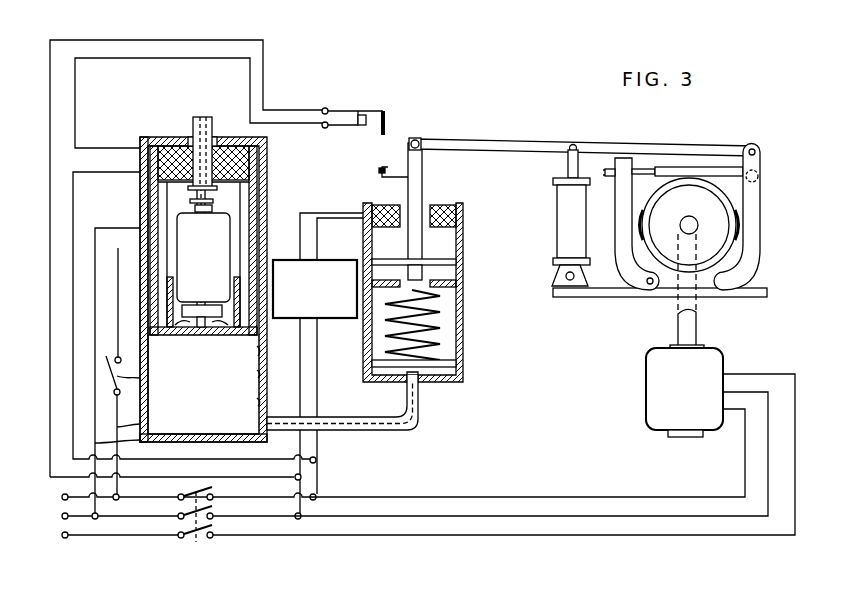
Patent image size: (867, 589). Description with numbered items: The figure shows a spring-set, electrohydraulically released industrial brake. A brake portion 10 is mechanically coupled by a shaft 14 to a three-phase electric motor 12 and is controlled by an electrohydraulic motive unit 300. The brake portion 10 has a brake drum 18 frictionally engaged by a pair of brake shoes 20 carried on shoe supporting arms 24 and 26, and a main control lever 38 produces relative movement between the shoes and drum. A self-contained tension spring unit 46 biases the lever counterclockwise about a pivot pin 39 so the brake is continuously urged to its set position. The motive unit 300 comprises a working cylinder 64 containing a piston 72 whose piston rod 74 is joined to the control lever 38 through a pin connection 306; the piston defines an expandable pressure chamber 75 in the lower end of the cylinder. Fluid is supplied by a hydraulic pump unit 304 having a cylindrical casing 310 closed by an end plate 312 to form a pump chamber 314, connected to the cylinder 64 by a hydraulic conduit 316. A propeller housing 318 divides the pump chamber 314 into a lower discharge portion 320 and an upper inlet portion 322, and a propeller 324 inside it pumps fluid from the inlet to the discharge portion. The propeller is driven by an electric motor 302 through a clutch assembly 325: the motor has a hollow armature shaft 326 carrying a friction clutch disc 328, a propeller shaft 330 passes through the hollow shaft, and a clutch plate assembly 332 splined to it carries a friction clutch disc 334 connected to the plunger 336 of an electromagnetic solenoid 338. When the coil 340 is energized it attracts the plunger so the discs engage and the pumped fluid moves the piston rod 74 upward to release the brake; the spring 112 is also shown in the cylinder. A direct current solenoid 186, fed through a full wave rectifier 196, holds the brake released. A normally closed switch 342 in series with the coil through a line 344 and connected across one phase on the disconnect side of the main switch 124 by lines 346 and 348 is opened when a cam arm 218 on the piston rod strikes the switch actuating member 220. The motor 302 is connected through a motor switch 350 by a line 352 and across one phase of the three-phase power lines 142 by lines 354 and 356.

The brake portion 10 is at (592, 340).
The three-phase electric motor 12 is at (718, 365).
The shaft 14 is at (697, 330).
The brake drum 18 is at (713, 205).
The brake shoes 20 is at (641, 273).
The shoe supporting arm 24 is at (752, 246).
The shoe supporting arm 26 is at (618, 224).
The main control rod or lever 38 is at (682, 148).
The pivot pin 39 is at (757, 148).
The self-contained tension spring unit 46 is at (552, 215).
The working cylinder 64 is at (462, 381).
The piston 72 is at (448, 364).
The piston rod 74 is at (422, 259).
The expandable pressure chamber 75 is at (424, 386).
The spring 112 is at (440, 330).
The main switch 124 is at (199, 540).
The three-phase power lines 142 is at (75, 495).
The direct current solenoid 186 is at (450, 208).
The full wave rectifier 196 is at (354, 263).
The projection or cam arm 218 is at (380, 171).
The switch actuating member 220 is at (387, 118).
The electrohydraulic motive unit 300 is at (347, 173).
The electric motor 302 is at (170, 218).
The hydraulic pump unit 304 is at (258, 238).
The pin connection 306 is at (421, 141).
The cylindrical casing 310 is at (258, 404).
The end plate 312 is at (238, 442).
The pump chamber 314 is at (225, 402).
The hydraulic conduit 316 is at (380, 431).
The propeller housing 318 is at (258, 356).
The discharge portion 320 is at (258, 376).
The inlet portion 322 is at (254, 260).
The propeller or turbine 324 is at (210, 330).
The clutch assembly 325 is at (180, 189).
The hollow armature shaft 326 is at (190, 332).
The friction clutch disc 328 is at (188, 203).
The propeller shaft 330 is at (255, 203).
The clutch plate assembly 332 is at (192, 124).
The friction clutch disc 334 is at (252, 186).
The plunger 336 is at (213, 119).
The electromagnetic solenoid 338 is at (262, 160).
The winding or coil 340 is at (140, 140).
The normally closed switch 342 is at (373, 108).
The line 344 is at (75, 102).
The line 346 is at (50, 58).
The line 348 is at (73, 192).
The motor switch 350 is at (140, 379).
The line 352 is at (119, 262).
The line 354 is at (140, 426).
The line 356 is at (162, 440).